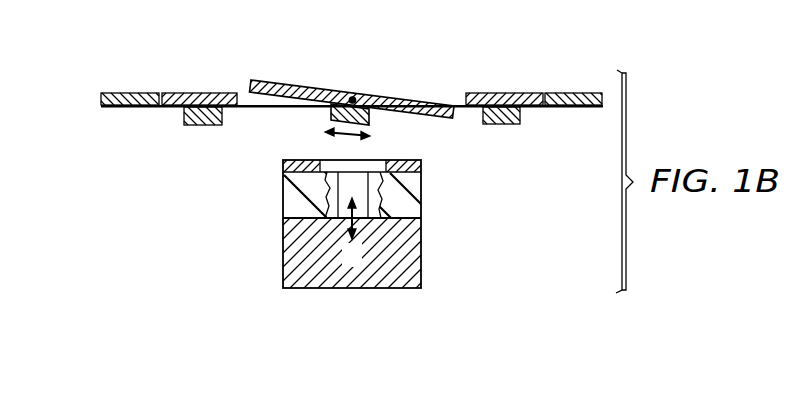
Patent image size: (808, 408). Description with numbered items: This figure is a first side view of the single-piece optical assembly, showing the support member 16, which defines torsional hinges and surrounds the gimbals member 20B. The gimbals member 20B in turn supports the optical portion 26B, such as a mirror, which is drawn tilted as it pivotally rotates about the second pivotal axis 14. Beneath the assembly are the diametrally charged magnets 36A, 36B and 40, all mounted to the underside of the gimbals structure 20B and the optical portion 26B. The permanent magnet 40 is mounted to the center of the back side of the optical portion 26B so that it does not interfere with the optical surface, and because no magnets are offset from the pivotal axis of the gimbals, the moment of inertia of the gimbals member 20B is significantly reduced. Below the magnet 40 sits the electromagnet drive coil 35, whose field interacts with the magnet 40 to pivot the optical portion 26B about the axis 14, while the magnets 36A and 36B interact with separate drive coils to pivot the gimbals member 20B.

The support member 16 is at (120, 107).
The gimbals member 20B is at (173, 93).
The optical portion 26B is at (272, 81).
The second pivotal axis 14 is at (357, 93).
The permanent magnet 40 is at (372, 115).
The magnet 36A is at (200, 127).
The magnet 36B is at (502, 125).
The drive magnet assembly 35 is at (283, 245).